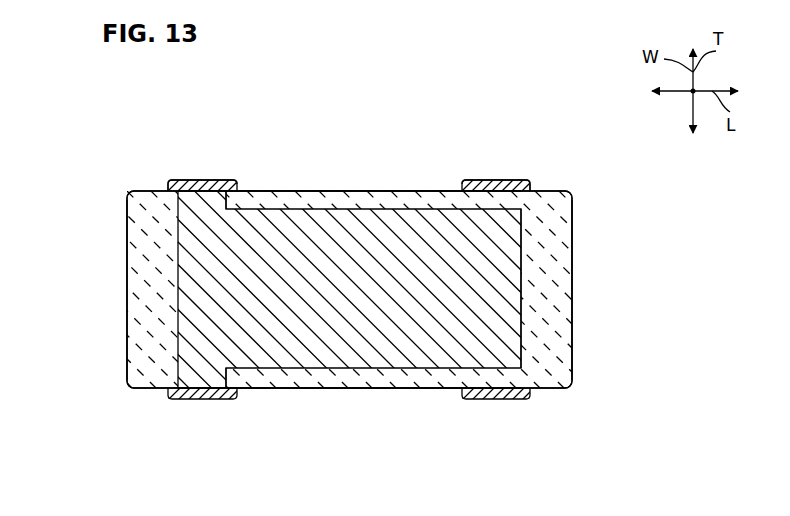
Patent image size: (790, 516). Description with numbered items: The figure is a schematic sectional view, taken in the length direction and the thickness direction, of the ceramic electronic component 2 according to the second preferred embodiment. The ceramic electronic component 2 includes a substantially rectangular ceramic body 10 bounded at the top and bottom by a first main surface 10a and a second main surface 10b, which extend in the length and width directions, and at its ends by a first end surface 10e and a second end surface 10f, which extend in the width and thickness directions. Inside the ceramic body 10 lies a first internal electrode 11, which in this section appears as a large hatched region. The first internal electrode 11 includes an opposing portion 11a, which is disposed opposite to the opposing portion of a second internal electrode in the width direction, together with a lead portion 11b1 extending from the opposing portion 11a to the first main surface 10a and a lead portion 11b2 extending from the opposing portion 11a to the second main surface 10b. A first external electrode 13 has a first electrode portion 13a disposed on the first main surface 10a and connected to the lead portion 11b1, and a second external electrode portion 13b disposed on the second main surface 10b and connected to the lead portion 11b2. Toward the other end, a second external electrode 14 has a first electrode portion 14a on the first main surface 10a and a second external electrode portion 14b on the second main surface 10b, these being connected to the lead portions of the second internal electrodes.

The ceramic electronic component 2 is at (516, 146).
The ceramic body 10 is at (419, 189).
The first main surface 10a is at (325, 190).
The second main surface 10b is at (405, 389).
The first end surface 10e is at (127, 241).
The second end surface 10f is at (572, 222).
The first internal electrode 11 is at (287, 206).
The opposing portion 11a is at (530, 283).
The lead portion 11b1 is at (177, 202).
The lead portion 11b2 is at (176, 372).
The first external electrode 13 is at (217, 179).
The first electrode portion 13a is at (173, 181).
The second external electrode portion 13b is at (188, 399).
The second external electrode 14 is at (494, 177).
The first electrode portion 14a is at (514, 177).
The second external electrode portion 14b is at (507, 398).